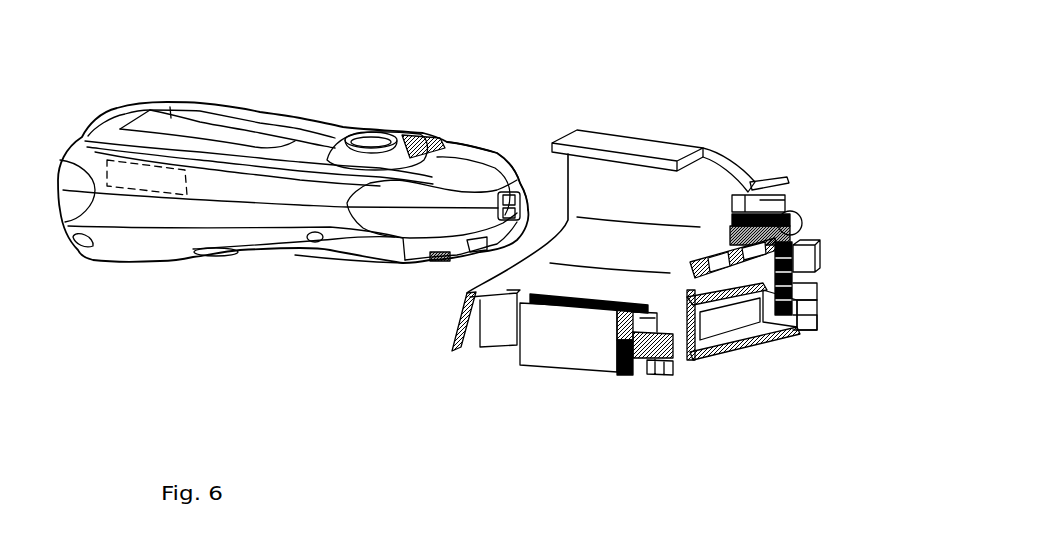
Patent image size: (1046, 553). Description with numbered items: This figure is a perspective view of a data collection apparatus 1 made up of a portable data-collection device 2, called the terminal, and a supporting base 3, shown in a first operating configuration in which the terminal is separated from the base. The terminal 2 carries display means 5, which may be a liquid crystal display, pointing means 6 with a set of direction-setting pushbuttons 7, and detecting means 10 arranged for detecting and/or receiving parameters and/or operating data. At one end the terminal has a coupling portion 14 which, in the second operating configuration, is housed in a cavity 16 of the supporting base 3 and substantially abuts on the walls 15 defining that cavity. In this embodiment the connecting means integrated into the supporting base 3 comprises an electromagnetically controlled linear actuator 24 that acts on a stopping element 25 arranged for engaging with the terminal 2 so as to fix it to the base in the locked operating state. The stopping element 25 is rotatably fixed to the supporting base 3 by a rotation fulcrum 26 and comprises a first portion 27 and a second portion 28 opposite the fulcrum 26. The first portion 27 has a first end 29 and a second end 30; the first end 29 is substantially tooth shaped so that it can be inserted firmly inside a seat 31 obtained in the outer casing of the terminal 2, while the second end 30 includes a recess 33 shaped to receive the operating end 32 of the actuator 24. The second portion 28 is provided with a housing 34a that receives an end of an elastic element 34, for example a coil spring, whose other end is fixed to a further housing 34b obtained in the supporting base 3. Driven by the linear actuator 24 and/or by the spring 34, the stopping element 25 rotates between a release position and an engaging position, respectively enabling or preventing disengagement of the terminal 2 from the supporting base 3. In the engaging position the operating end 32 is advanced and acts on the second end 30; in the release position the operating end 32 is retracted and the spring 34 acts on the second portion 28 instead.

The data collection apparatus 1 is at (508, 78).
The portable data-collection device 2 is at (70, 128).
The supporting base 3 is at (350, 398).
The display means 5 is at (192, 136).
The pointing means 6 is at (381, 126).
The direction-setting pushbuttons 7 is at (419, 127).
The detecting means 10 is at (138, 193).
The coupling portion 14 is at (503, 140).
The walls 15 is at (748, 171).
The cavity 16 is at (633, 248).
The linear actuator 24 is at (540, 348).
The stopping element 25 is at (725, 470).
The rotation fulcrum 26 is at (750, 355).
The first portion 27 is at (713, 364).
The second portion 28 is at (797, 343).
The first end 29 is at (692, 262).
The second end 30 is at (657, 380).
The seat 31 is at (438, 268).
The operating end 32 is at (617, 347).
The recess 33 is at (667, 370).
The elastic element 34 is at (808, 335).
The housing 34a is at (777, 338).
The further housing 34b is at (803, 237).